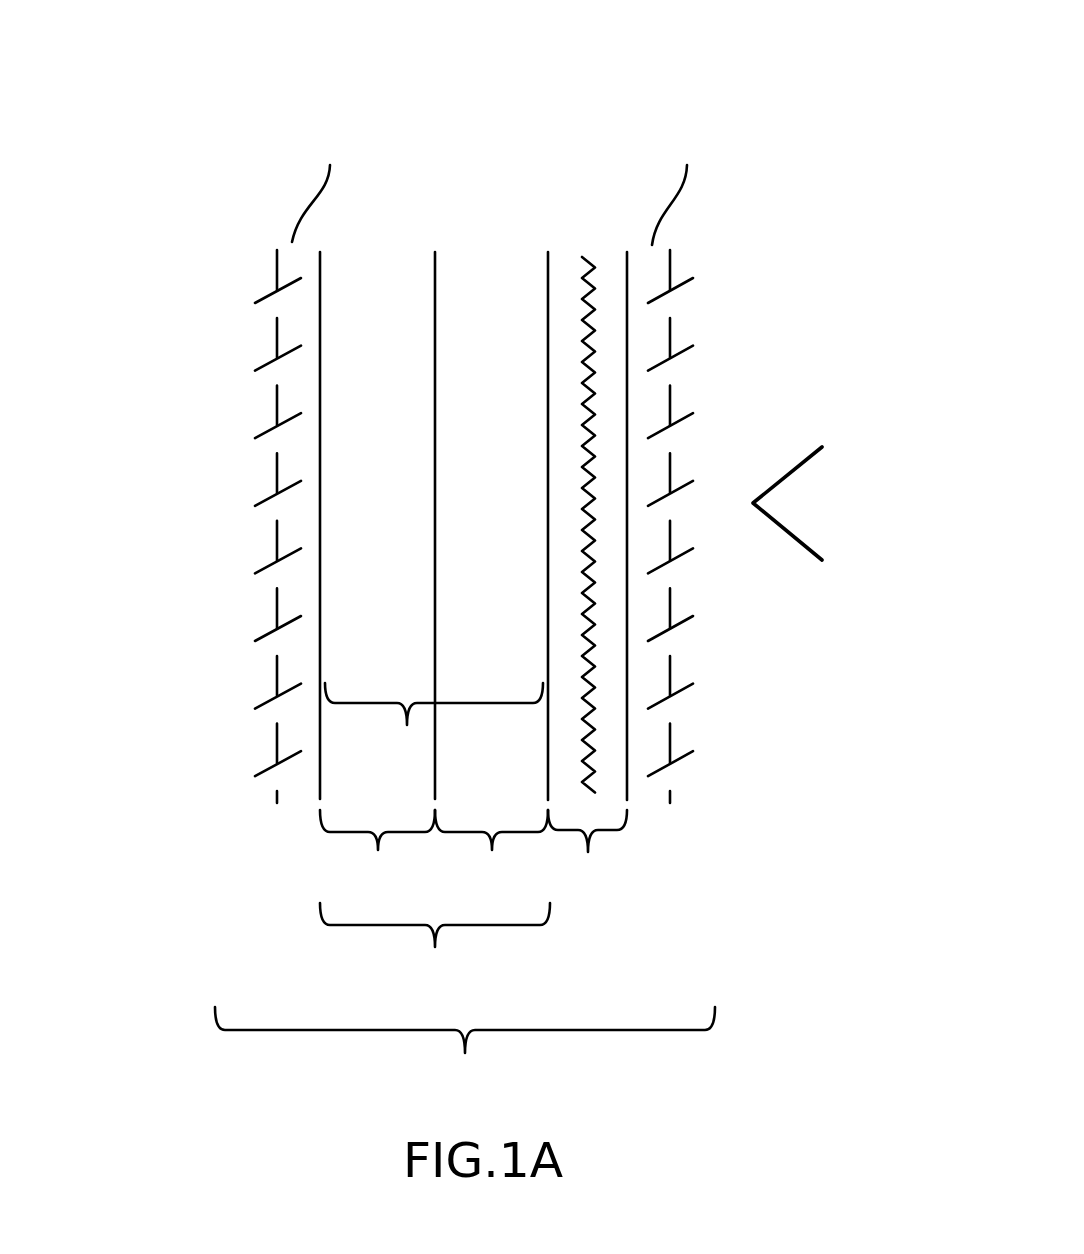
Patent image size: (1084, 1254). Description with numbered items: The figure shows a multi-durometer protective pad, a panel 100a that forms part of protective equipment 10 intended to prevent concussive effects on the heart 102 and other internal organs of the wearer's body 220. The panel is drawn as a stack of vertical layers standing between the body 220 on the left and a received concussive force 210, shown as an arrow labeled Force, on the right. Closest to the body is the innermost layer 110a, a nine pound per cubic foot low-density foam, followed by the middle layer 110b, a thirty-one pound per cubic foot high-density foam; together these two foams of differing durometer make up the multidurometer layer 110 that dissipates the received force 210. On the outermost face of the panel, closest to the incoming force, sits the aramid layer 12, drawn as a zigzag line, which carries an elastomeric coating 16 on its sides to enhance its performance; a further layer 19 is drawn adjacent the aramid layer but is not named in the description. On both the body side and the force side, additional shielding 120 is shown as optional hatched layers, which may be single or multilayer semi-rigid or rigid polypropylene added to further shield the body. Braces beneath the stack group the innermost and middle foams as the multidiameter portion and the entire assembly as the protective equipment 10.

The panel 100a is at (858, 53).
The protective equipment 10 is at (465, 1047).
The aramid layer 12 is at (568, 280).
The elastomeric coating 16 is at (548, 790).
The outer layer 19 is at (628, 788).
The heart 102 is at (135, 450).
The body 220 is at (135, 517).
The multidurometer layer 110 is at (435, 834).
The innermost layer 110a is at (373, 358).
The middle layer 110b is at (488, 358).
The additional shielding 120 is at (277, 238).
The received concussive force 210 is at (873, 457).